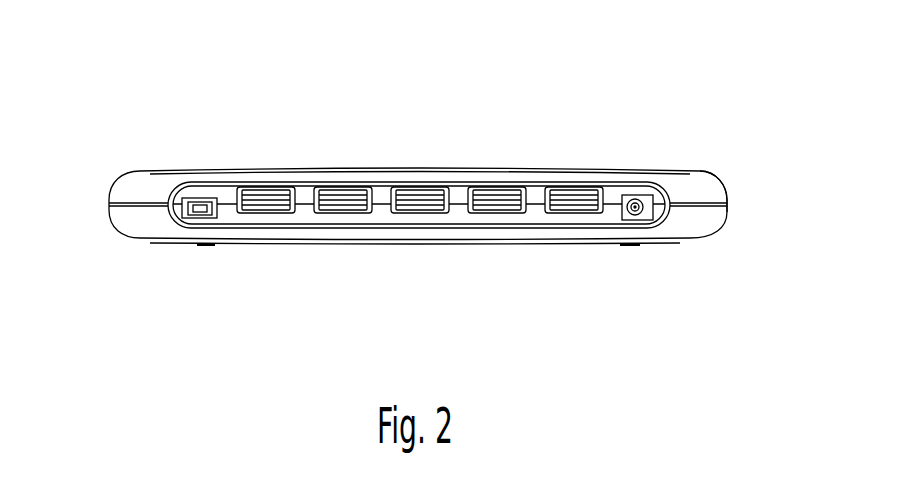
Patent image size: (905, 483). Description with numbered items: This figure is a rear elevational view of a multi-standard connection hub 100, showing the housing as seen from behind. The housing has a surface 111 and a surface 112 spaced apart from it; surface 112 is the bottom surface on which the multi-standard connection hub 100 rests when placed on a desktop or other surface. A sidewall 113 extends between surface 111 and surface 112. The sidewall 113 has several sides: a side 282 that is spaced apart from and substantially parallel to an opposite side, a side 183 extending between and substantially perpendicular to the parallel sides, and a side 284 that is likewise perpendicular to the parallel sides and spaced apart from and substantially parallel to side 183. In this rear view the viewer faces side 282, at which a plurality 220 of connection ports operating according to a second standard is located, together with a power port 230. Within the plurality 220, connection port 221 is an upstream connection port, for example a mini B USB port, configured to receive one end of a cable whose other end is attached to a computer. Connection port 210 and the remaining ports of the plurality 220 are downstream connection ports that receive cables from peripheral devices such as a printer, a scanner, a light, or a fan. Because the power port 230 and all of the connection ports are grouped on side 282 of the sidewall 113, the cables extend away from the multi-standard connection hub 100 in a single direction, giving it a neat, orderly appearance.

The multi-standard connection hub 100 is at (153, 56).
The surface 111 is at (272, 168).
The surface 112 is at (655, 243).
The sidewall 113 is at (688, 218).
The side 183 is at (740, 190).
The side 284 is at (98, 193).
The connection port 210 is at (245, 188).
The side 282 is at (402, 188).
The plurality of connection ports 220 is at (610, 253).
The connection port 221 is at (176, 210).
The power port 230 is at (645, 195).